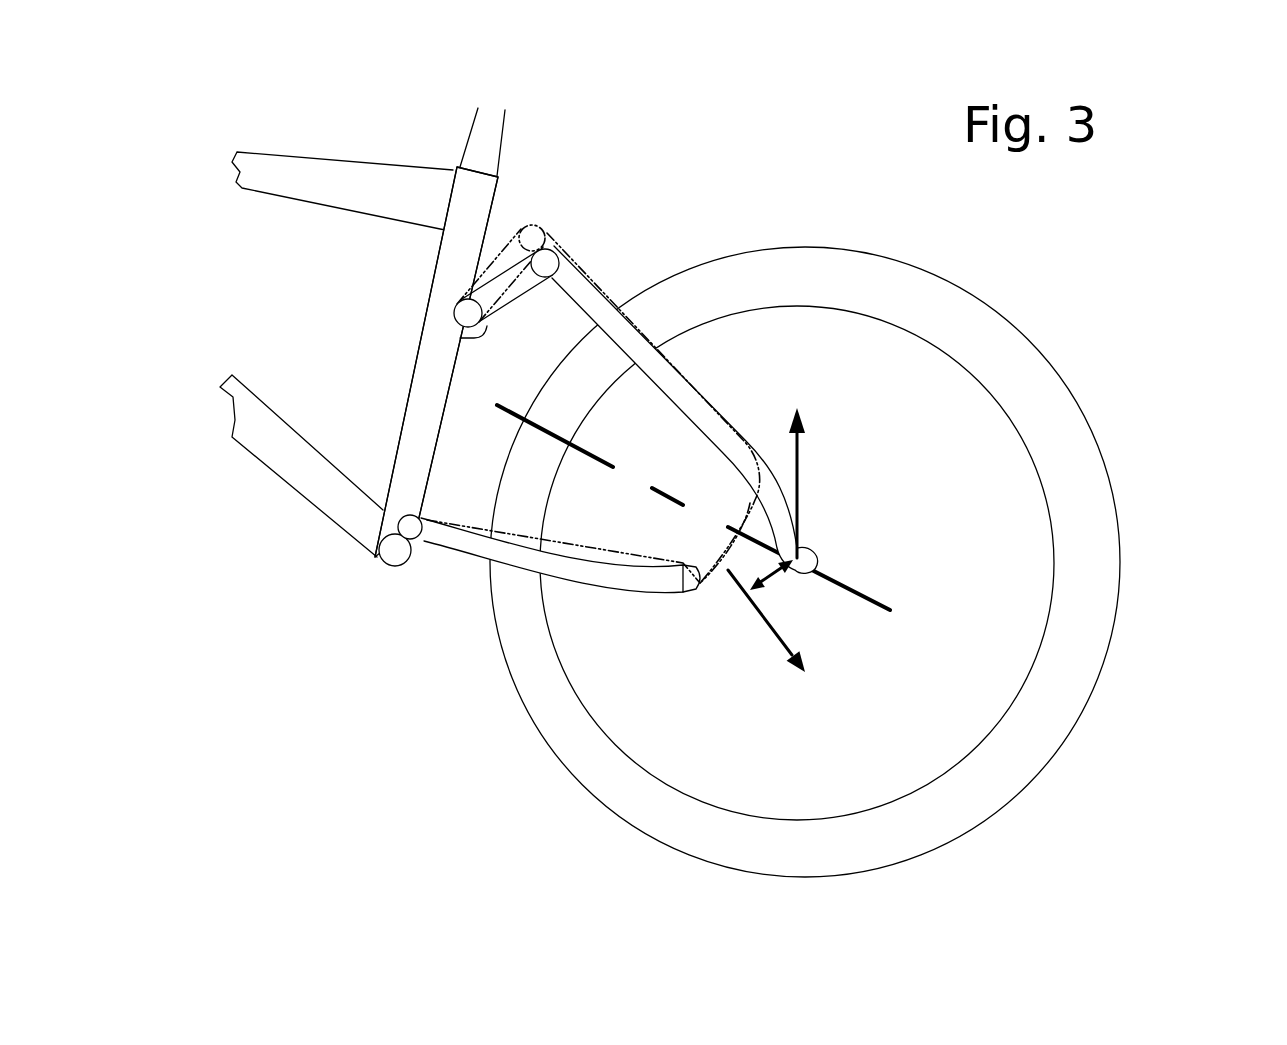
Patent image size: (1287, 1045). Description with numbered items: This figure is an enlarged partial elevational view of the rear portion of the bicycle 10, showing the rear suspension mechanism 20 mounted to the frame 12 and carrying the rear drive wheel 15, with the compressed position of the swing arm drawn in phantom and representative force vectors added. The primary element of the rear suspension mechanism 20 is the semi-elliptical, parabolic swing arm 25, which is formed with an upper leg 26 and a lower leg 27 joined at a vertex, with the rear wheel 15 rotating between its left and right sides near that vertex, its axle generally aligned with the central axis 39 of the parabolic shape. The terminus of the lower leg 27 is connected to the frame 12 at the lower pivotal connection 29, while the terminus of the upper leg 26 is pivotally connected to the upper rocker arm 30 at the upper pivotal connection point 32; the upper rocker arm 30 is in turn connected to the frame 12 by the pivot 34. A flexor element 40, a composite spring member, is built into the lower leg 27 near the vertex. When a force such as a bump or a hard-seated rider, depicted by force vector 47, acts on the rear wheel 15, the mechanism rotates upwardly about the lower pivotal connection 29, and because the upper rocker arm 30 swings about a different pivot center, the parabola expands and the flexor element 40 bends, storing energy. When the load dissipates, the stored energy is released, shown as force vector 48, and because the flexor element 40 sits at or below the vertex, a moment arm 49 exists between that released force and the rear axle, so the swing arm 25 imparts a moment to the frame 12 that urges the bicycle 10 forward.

The bicycle 10 is at (1070, 249).
The frame 12 is at (284, 152).
The rear drive wheel 15 is at (1075, 388).
The rear suspension mechanism 20 is at (372, 670).
The semi-elliptical swing arm 25 is at (588, 263).
The upper leg 26 is at (710, 416).
The lower leg 27 is at (450, 558).
The lower pivotal connection 29 is at (392, 538).
The upper rocker arm 30 is at (515, 265).
The upper pivotal connection point 32 is at (553, 243).
The pivot 34 is at (453, 314).
The central axis 39 is at (858, 582).
The flexor element 40 is at (703, 567).
The force vector 47 is at (800, 478).
The force vector 48 is at (782, 635).
The moment arm 49 is at (800, 575).